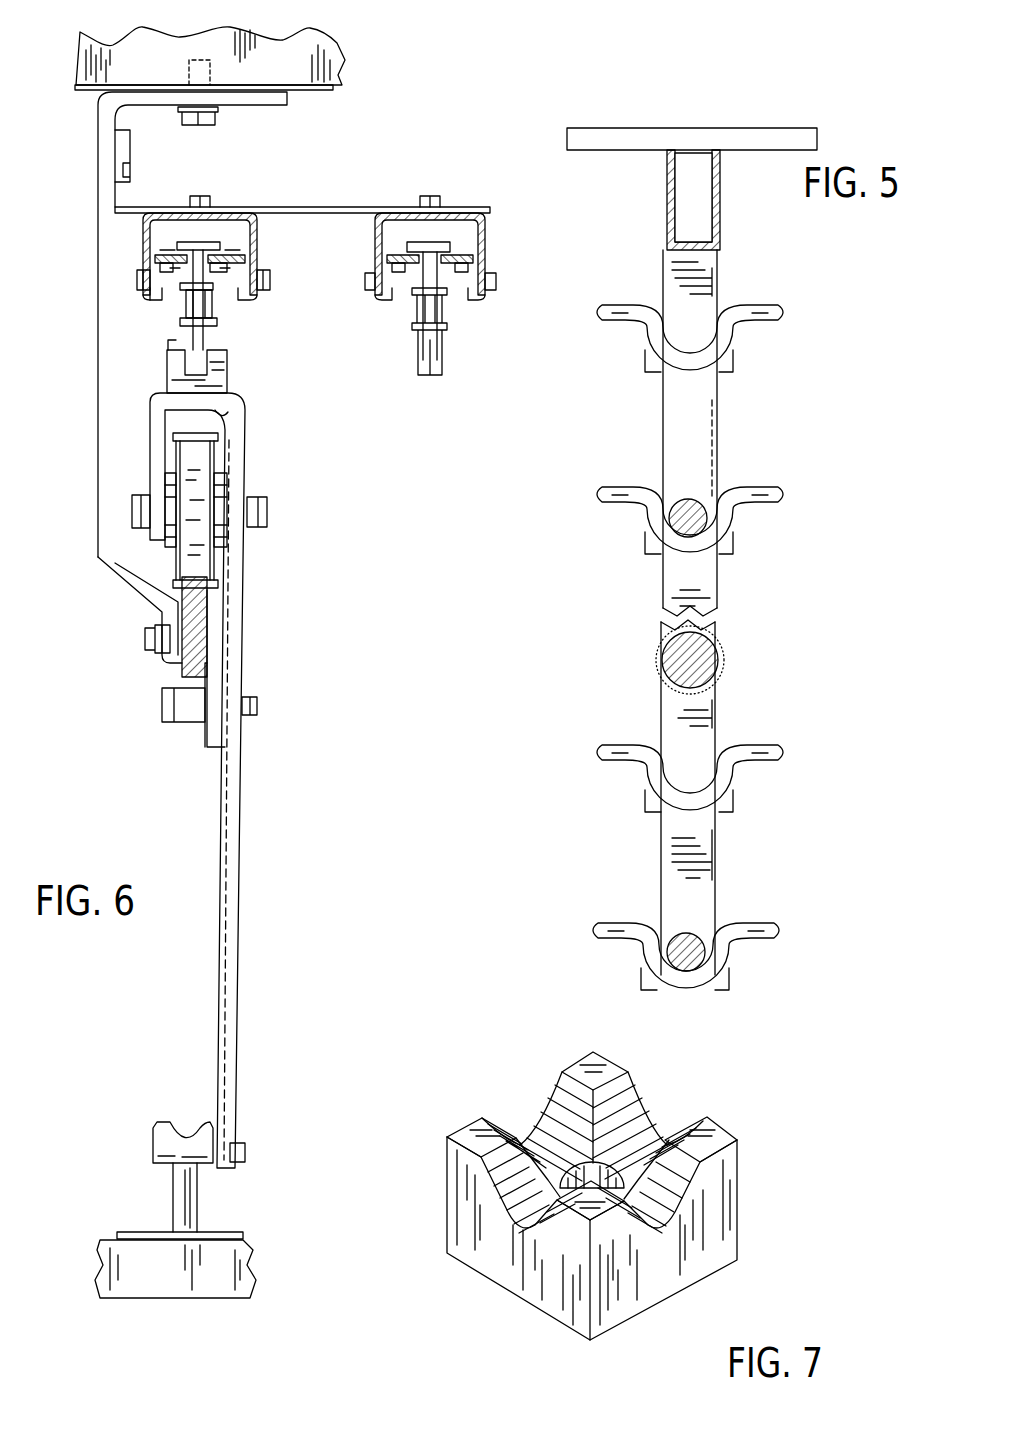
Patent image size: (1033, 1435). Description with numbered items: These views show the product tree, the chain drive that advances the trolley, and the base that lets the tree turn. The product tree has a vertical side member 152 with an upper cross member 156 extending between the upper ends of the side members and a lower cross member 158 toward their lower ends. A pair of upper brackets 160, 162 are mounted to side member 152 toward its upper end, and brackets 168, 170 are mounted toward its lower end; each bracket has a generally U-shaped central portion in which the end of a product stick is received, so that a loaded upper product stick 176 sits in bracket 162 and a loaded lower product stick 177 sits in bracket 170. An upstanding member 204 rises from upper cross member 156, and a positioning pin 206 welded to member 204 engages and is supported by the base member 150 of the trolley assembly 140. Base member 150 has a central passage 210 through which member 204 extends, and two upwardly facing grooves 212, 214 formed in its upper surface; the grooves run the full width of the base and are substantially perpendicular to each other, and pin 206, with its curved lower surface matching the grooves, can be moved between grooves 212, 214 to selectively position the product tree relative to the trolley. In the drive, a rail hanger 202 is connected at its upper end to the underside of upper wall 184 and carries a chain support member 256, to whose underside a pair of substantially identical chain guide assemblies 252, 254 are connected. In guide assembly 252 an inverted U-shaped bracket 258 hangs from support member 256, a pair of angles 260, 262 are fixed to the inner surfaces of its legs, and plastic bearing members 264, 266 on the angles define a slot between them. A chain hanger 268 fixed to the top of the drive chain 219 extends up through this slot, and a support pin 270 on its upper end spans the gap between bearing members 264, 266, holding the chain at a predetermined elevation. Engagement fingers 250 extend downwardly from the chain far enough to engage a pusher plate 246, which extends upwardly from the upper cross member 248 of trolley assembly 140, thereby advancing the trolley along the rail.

In FIG. 6, the upper wall 184 is at (318, 95).
In FIG. 6, the rail hanger 202 is at (97, 355).
In FIG. 6, the chain support member 256 is at (305, 208).
In FIG. 6, the chain guide assembly 252 is at (283, 249).
In FIG. 6, the chain guide assembly 254 is at (512, 250).
In FIG. 6, the plastic bearing member 264 is at (162, 248).
In FIG. 6, the plastic bearing member 266 is at (238, 248).
In FIG. 6, the support pin 270 is at (182, 250).
In FIG. 6, the inverted U-shaped bracket 258 is at (255, 252).
In FIG. 6, the angle 262 is at (240, 286).
In FIG. 6, the chain 219 is at (235, 317).
In FIG. 6, the angle 260 is at (148, 292).
In FIG. 6, the engagement finger 250 is at (210, 338).
In FIG. 6, the chain hanger 268 is at (185, 275).
In FIG. 6, the pusher plate 246 is at (228, 372).
In FIG. 6, the upper cross member 248 is at (210, 422).
In FIG. 6, the trolley assembly 140 is at (360, 509).
In FIG. 6, the positioning pin 206 is at (150, 1128).
In FIG. 6, the upstanding member 204 is at (200, 1200).
In FIG. 6, the upper cross member 156 is at (212, 1300).
In FIG. 5, the upper cross member 156 is at (722, 203).
In FIG. 5, the vertical side member 152 is at (720, 420).
In FIG. 5, the upper bracket 160 is at (752, 322).
In FIG. 5, the upper bracket 162 is at (745, 508).
In FIG. 5, the upper product stick 176 is at (700, 505).
In FIG. 5, the lower cross member 158 is at (718, 640).
In FIG. 5, the bracket 168 is at (740, 770).
In FIG. 5, the lower product stick 177 is at (700, 935).
In FIG. 5, the bracket 170 is at (735, 945).
In FIG. 7, the base member 150 is at (740, 1185).
In FIG. 7, the groove 214 is at (545, 1128).
In FIG. 7, the groove 212 is at (520, 1190).
In FIG. 7, the central passage 210 is at (605, 1165).